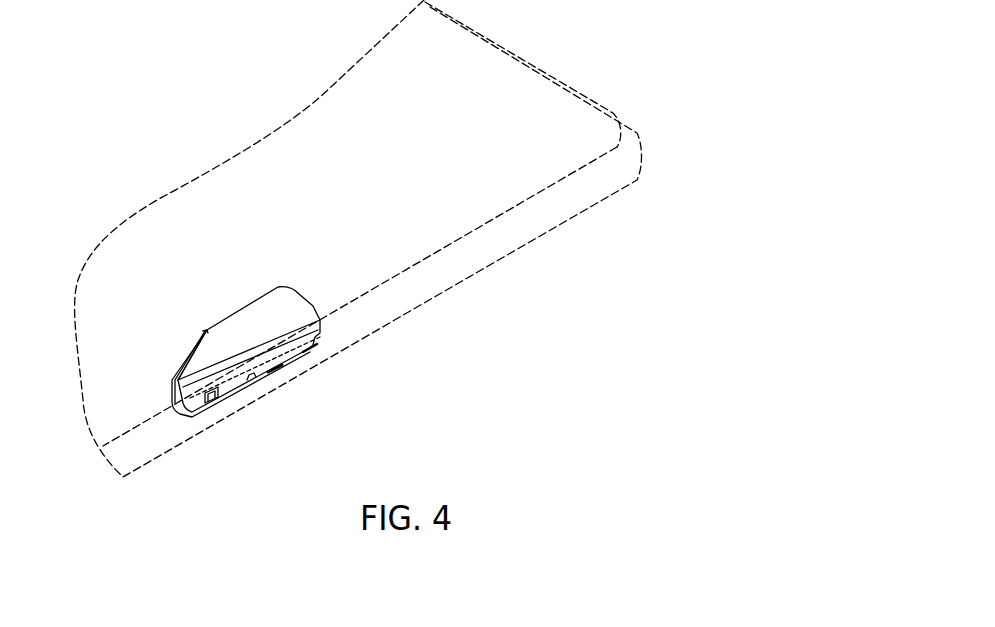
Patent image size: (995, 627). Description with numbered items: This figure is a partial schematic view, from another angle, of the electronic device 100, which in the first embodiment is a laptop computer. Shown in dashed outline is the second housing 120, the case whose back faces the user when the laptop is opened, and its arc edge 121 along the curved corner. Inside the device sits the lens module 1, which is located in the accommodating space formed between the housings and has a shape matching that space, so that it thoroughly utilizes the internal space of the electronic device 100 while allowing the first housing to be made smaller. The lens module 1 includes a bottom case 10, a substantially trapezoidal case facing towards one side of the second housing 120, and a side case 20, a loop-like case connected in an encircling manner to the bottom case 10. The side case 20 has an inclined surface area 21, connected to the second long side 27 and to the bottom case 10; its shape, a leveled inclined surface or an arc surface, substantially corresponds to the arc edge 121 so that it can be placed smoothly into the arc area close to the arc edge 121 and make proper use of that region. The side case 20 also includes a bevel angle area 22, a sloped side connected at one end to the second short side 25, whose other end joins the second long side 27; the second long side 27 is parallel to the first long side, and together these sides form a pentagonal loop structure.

The electronic device 100 is at (98, 92).
The second housing 120 is at (297, 162).
The arc edge 121 is at (403, 290).
The lens module 1 is at (228, 363).
The bottom case 10 is at (262, 313).
The side case 20 is at (290, 361).
The inclined surface area 21 is at (314, 311).
The bevel angle area 22 is at (172, 377).
The second short side 25 is at (177, 420).
The second long side 27 is at (262, 370).